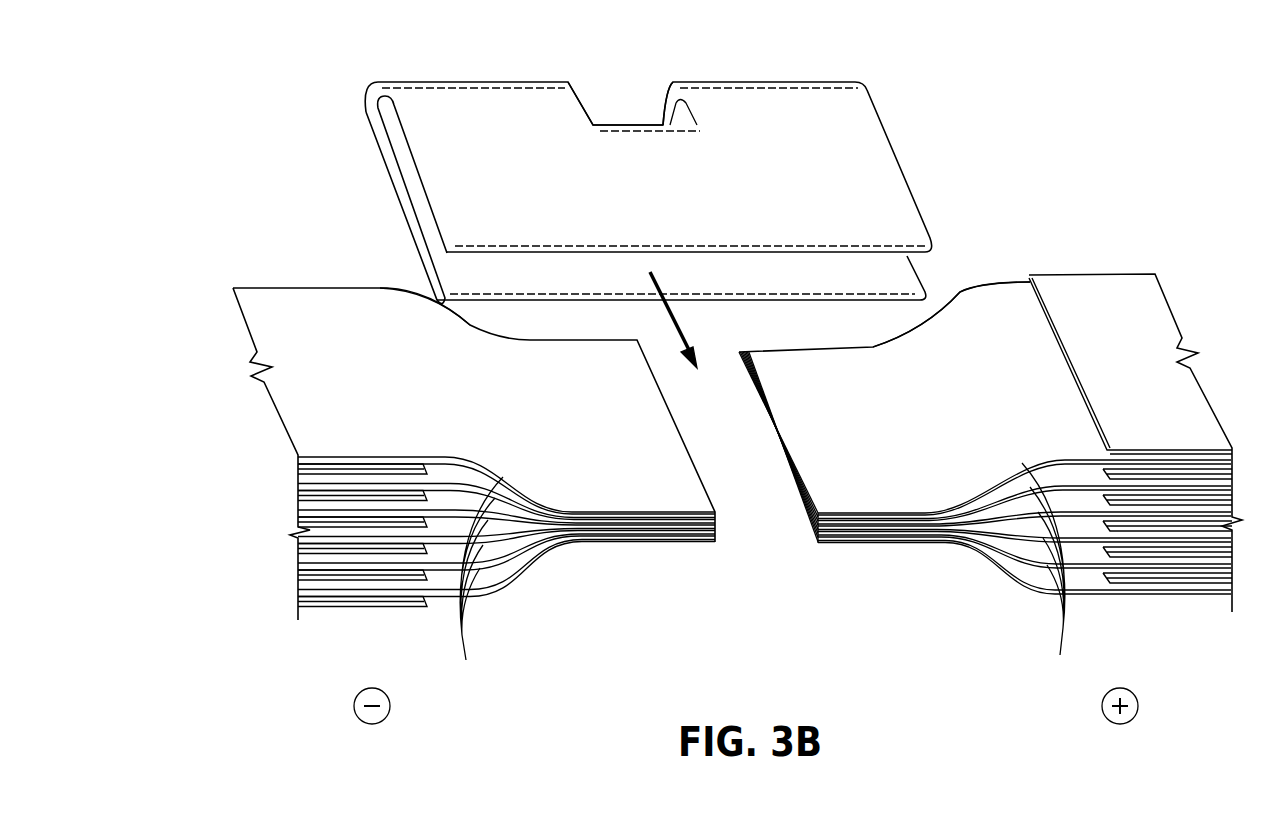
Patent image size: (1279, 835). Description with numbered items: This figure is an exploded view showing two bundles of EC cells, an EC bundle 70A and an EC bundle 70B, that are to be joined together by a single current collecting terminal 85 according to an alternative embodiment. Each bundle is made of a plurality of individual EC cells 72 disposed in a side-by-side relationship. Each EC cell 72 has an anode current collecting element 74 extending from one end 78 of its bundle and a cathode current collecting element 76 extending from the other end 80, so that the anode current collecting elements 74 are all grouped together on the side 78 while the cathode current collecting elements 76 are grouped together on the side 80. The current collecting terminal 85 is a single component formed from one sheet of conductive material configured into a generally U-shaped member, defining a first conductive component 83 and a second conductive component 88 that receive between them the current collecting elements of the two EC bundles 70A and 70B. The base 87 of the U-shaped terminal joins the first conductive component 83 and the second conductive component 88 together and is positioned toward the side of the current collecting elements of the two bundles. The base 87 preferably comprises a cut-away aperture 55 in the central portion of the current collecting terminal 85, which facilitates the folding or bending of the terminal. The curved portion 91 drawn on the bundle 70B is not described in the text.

The cut-away aperture 55 is at (618, 95).
The current collecting terminal 85 is at (741, 70).
The first conductive component 83 is at (848, 126).
The base 87 is at (366, 90).
The second conductive component 88 is at (845, 284).
The curved portion 91 is at (943, 368).
The EC bundle 70A is at (339, 244).
The EC bundle 70B is at (1097, 225).
The anode current collecting element 74 is at (463, 373).
The cathode current collecting element 76 is at (1049, 580).
The EC cell 72 is at (406, 470).
The end of the EC bundle 78 is at (728, 605).
The other end of the EC bundle 80 is at (1032, 605).